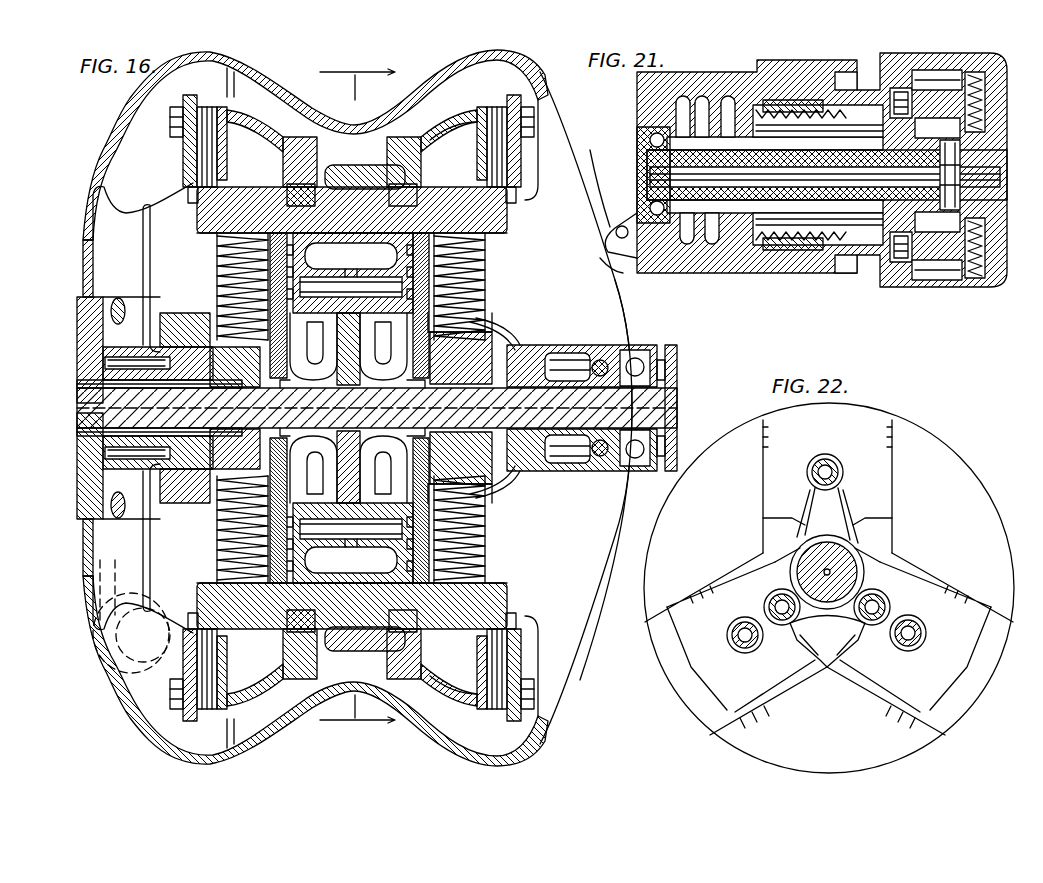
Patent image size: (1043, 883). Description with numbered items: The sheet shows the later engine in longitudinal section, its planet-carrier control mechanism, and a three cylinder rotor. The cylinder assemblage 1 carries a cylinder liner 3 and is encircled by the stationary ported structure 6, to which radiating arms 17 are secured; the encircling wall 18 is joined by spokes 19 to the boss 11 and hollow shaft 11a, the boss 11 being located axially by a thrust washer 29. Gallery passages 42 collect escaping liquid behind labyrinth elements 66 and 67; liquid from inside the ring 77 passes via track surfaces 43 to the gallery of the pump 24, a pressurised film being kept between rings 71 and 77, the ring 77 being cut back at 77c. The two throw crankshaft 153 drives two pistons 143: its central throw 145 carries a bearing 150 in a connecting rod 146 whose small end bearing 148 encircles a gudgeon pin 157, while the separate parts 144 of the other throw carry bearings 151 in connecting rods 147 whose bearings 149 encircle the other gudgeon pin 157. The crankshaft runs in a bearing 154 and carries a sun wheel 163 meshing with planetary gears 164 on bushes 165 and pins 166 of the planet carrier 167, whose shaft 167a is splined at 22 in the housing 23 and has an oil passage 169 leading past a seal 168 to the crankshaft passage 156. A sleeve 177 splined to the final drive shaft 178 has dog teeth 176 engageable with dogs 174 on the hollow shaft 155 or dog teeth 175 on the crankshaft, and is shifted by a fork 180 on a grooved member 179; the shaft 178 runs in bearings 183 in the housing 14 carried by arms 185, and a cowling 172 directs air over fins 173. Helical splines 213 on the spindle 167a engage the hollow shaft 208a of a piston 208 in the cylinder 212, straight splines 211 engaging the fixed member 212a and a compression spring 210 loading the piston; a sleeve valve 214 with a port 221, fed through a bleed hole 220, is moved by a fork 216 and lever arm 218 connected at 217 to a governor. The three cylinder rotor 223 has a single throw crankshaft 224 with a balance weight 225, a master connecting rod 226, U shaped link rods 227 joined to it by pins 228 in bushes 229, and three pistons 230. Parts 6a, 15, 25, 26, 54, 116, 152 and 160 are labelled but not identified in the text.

In FIG. 16, the housing 1 is at (440, 205).
In FIG. 16, the cover plate 3 is at (452, 180).
In FIG. 16, the casing section 6 is at (320, 180).
In FIG. 16, the casing flange 6a is at (425, 190).
In FIG. 16, the hub 11 is at (215, 490).
In FIG. 16, the hub extension 11a is at (130, 500).
In FIG. 16, the bearing housing 14 is at (590, 475).
In FIG. 16, the shaft 15 is at (352, 394).
In FIG. 21, the shaft 15 is at (732, 200).
In FIG. 16, the housing wall 17 is at (118, 220).
In FIG. 16, the flange ring 18 is at (255, 198).
In FIG. 16, the housing hub 19 is at (155, 220).
In FIG. 16, the seal 22 is at (95, 480).
In FIG. 16, the bearing 23 is at (85, 470).
In FIG. 16, the drain opening 24 is at (93, 632).
In FIG. 16, the end plate 25 is at (120, 278).
In FIG. 16, the retainer 26 is at (105, 490).
In FIG. 21, the sleeve 29 is at (870, 275).
In FIG. 16, the cover 42 is at (412, 150).
In FIG. 16, the bearing 43 is at (400, 185).
In FIG. 16, the cover web 54 is at (435, 165).
In FIG. 16, the outer casing 66 is at (533, 90).
In FIG. 16, the bolt 67 is at (510, 620).
In FIG. 16, the rib 71 is at (290, 625).
In FIG. 16, the ring 77 is at (400, 625).
In FIG. 16, the ring portion 77c is at (300, 180).
In FIG. 21, the screw 116 is at (918, 85).
In FIG. 16, the clutch plate 143 is at (345, 195).
In FIG. 16, the spring 144 is at (240, 560).
In FIG. 16, the spring seat 145 is at (225, 280).
In FIG. 16, the roller 146 is at (350, 280).
In FIG. 16, the pressure plate 147 is at (345, 505).
In FIG. 16, the cage 148 is at (370, 262).
In FIG. 16, the race 149 is at (372, 538).
In FIG. 16, the cup 150 is at (330, 345).
In FIG. 16, the pin 151 is at (360, 520).
In FIG. 21, the end cap 152 is at (1003, 285).
In FIG. 16, the seal ring 153 is at (530, 465).
In FIG. 16, the spring retainer 154 is at (232, 300).
In FIG. 16, the flange 155 is at (505, 340).
In FIG. 16, the sleeve 156 is at (210, 300).
In FIG. 21, the sleeve 156 is at (985, 280).
In FIG. 16, the bearing block 157 is at (330, 262).
In FIG. 21, the end housing 160 is at (945, 95).
In FIG. 16, the collar 163 is at (205, 480).
In FIG. 16, the ring 164 is at (230, 510).
In FIG. 21, the ring 164 is at (920, 270).
In FIG. 16, the washer 165 is at (240, 525).
In FIG. 16, the nut 166 is at (245, 540).
In FIG. 21, the nut 166 is at (950, 265).
In FIG. 16, the sleeve member 167 is at (195, 465).
In FIG. 21, the sleeve member 167 is at (860, 75).
In FIG. 16, the sleeve shoulder 167a is at (200, 345).
In FIG. 21, the sleeve shoulder 167a is at (840, 260).
In FIG. 16, the thrust ring 168 is at (205, 315).
In FIG. 16, the spacer 169 is at (200, 333).
In FIG. 21, the spacer 169 is at (818, 125).
In FIG. 16, the housing shell 172 is at (262, 75).
In FIG. 16, the partition 173 is at (440, 97).
In FIG. 16, the hub member 174 is at (452, 339).
In FIG. 16, the diaphragm 175 is at (500, 350).
In FIG. 16, the hub flange 176 is at (445, 455).
In FIG. 16, the flange 177 is at (671, 350).
In FIG. 16, the flange face 178 is at (672, 380).
In FIG. 16, the ball bearing 179 is at (638, 355).
In FIG. 16, the seal 180 is at (598, 360).
In FIG. 16, the bolt hole 183 is at (640, 440).
In FIG. 16, the outer shell 185 is at (562, 112).
In FIG. 21, the body 208 is at (675, 108).
In FIG. 21, the body extension 208a is at (815, 245).
In FIG. 21, the passage 210 is at (704, 96).
In FIG. 21, the spring 211 is at (765, 108).
In FIG. 21, the piston 212 is at (710, 255).
In FIG. 21, the piston rod 212a is at (790, 112).
In FIG. 21, the cylinder 213 is at (772, 250).
In FIG. 21, the screw 214 is at (655, 140).
In FIG. 21, the cap 216 is at (655, 205).
In FIG. 21, the bore 217 is at (680, 262).
In FIG. 21, the end plate 218 is at (650, 272).
In FIG. 21, the rod 220 is at (700, 170).
In FIG. 21, the bushing 221 is at (690, 137).
In FIG. 22, the disc 223 is at (912, 437).
In FIG. 22, the hub 224 is at (823, 540).
In FIG. 22, the spider 225 is at (830, 632).
In FIG. 22, the roller 226 is at (837, 505).
In FIG. 22, the roller 227 is at (748, 623).
In FIG. 22, the arm 228 is at (777, 597).
In FIG. 22, the arm 229 is at (780, 625).
In FIG. 22, the segment 230 is at (778, 481).